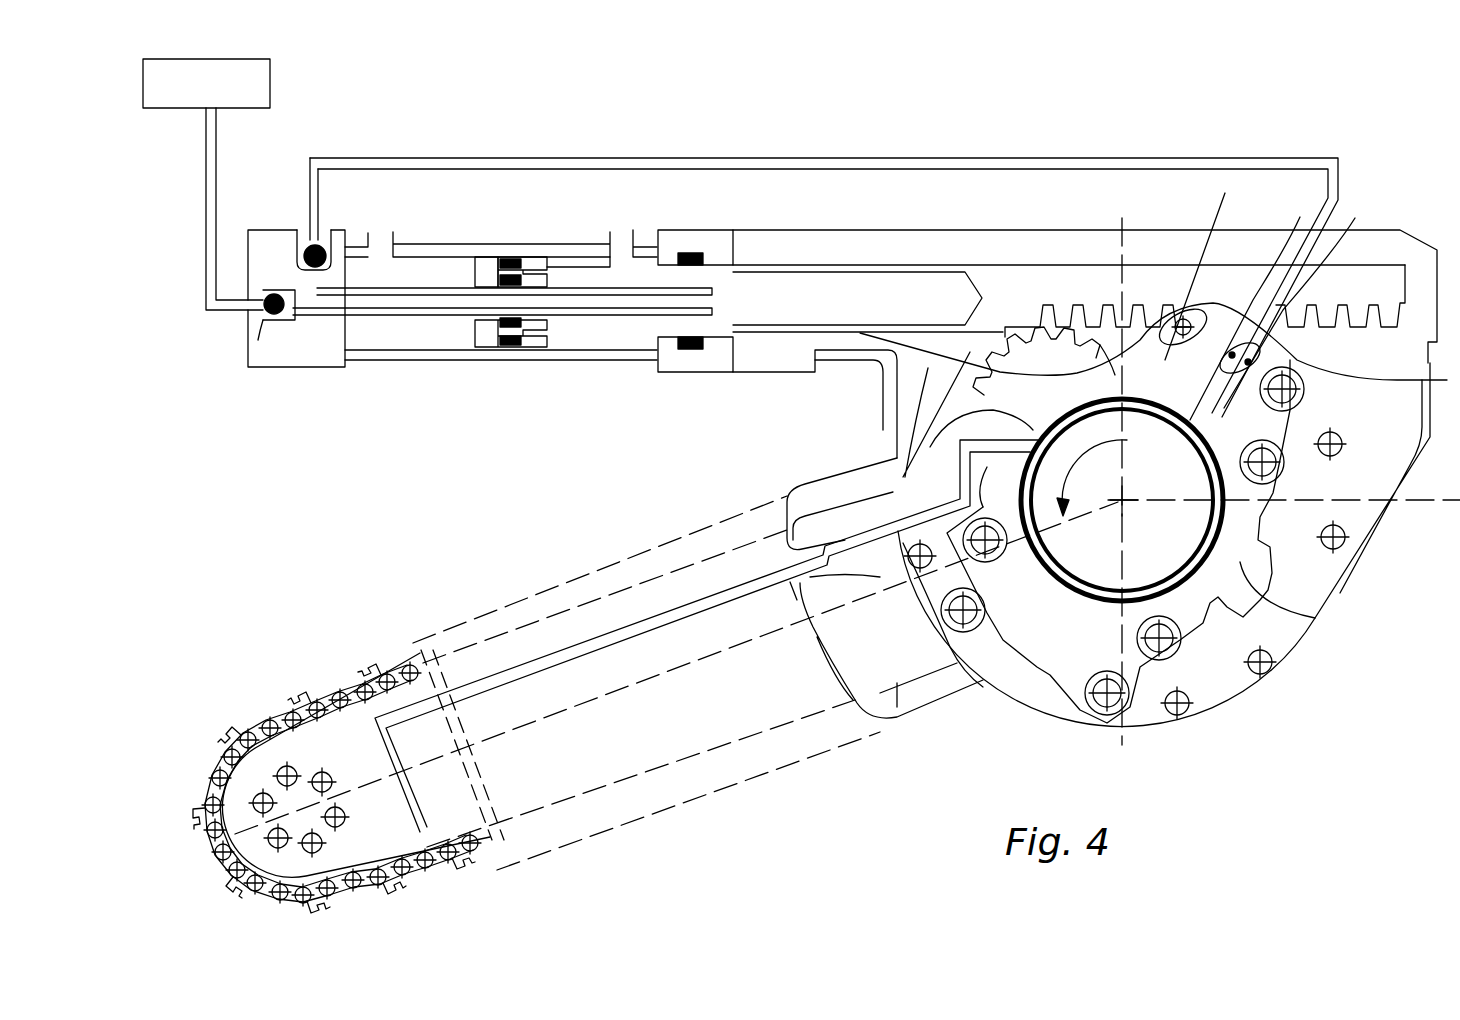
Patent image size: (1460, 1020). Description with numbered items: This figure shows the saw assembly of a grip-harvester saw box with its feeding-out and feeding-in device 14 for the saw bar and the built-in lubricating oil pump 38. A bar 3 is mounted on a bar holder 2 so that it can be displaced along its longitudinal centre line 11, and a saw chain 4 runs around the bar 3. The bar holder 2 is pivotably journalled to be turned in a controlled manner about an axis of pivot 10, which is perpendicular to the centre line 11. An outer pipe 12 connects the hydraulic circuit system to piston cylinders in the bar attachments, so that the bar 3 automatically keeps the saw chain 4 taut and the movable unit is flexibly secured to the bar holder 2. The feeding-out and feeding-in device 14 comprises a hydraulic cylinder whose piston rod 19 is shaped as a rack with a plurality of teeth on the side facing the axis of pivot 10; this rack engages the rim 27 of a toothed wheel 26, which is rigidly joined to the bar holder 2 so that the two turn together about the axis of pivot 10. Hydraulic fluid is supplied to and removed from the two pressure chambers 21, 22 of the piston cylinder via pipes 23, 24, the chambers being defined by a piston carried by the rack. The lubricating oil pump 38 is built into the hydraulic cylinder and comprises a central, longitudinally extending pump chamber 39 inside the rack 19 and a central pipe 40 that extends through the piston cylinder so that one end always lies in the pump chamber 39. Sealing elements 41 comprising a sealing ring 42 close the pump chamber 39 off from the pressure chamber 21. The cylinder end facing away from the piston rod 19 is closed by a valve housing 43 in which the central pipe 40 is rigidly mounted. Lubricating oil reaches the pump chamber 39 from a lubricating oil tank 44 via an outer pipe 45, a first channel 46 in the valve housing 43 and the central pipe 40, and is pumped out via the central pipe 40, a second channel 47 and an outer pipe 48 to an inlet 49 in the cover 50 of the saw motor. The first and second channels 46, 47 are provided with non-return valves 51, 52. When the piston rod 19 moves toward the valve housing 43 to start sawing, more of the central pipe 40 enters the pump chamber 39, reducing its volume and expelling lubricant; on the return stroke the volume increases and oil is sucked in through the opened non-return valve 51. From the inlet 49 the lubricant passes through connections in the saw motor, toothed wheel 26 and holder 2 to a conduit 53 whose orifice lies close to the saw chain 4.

The bar holder 2 is at (943, 677).
The bar 3 is at (400, 870).
The saw chain 4 is at (318, 900).
The axis of pivot 10 is at (1125, 503).
The longitudinal centre line of the bar 11 is at (603, 697).
The outer pipe 12 is at (1220, 215).
The feeding-out and feeding-in device 14 is at (963, 232).
The piston rod 19 is at (1030, 270).
The pressure chamber 21 is at (447, 265).
The pressure chamber 22 is at (568, 263).
The pipe 23 is at (393, 240).
The pipe 24 is at (610, 243).
The toothed wheel 26 is at (1053, 353).
The rim 27 is at (1080, 330).
The lubricating oil pump 38 is at (600, 313).
The pump chamber 39 is at (747, 303).
The central pipe 40 is at (405, 320).
The sealing elements 41 is at (487, 278).
The sealing ring 42 is at (498, 325).
The valve housing 43 is at (305, 368).
The lubricating oil tank 44 is at (270, 96).
The outer pipe 45 is at (216, 176).
The first channel 46 is at (257, 315).
The second channel 47 is at (322, 235).
The outer pipe 48 is at (750, 157).
The inlet 49 is at (1250, 362).
The cover of the saw motor 50 is at (1318, 618).
The non-return valve 51 is at (262, 297).
The non-return valve 52 is at (311, 243).
The conduit 53 is at (540, 658).